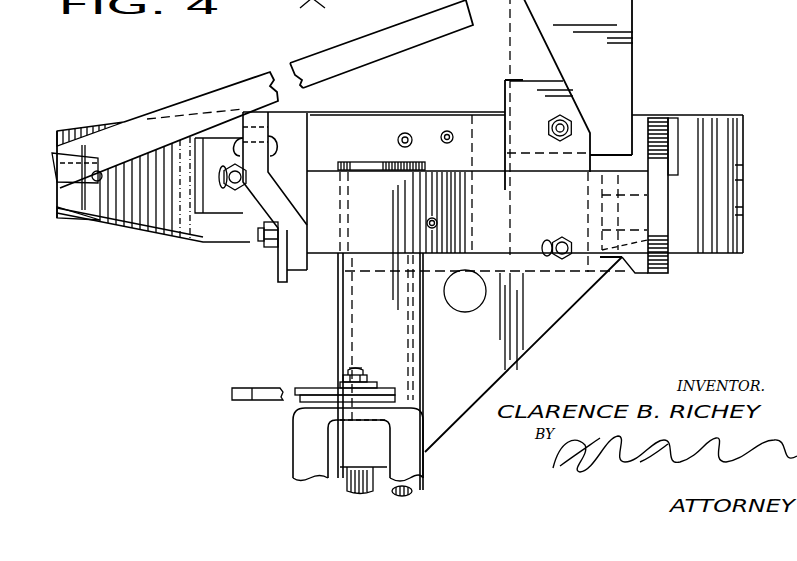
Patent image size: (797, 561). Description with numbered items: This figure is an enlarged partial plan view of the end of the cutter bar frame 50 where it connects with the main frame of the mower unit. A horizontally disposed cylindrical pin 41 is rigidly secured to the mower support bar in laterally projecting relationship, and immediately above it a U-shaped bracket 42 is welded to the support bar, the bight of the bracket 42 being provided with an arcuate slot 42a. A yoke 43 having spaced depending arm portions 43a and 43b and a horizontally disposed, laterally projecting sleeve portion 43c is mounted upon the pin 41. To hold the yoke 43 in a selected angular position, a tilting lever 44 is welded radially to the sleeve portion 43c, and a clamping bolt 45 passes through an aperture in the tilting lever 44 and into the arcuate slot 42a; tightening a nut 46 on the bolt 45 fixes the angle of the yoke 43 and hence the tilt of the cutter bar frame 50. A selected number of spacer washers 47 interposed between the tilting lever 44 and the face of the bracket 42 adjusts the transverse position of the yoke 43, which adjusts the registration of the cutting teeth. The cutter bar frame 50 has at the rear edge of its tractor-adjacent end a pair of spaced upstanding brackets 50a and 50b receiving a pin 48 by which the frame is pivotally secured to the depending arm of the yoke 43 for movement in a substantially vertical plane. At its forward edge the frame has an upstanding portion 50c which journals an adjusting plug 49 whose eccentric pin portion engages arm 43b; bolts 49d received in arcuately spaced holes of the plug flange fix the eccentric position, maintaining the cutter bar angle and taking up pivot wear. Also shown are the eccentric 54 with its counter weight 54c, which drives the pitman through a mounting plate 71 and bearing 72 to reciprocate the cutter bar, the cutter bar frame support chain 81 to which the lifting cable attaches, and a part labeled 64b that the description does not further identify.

The cylindrical pin 41 is at (413, 494).
The U-shaped bracket 42 is at (303, 437).
The arcuate slot 42a is at (410, 406).
The yoke 43 is at (563, 296).
The depending arm portion 43a is at (635, 259).
The depending arm portion 43b is at (393, 221).
The sleeve portion 43c is at (345, 305).
The tilting lever 44 is at (270, 388).
The clamping bolt 45 is at (353, 369).
The nut 46 is at (375, 369).
The spacer washers 47 is at (300, 402).
The pin 48 is at (668, 210).
The adjusting plug 49 is at (322, 248).
The bolts 49d is at (265, 236).
The cutter bar frame 50 is at (636, 66).
The upstanding bracket 50a is at (668, 243).
The upstanding bracket 50b is at (659, 122).
The upstanding portion 50c is at (265, 198).
The eccentric 54 is at (238, 106).
The counter weight 54c is at (153, 91).
The arm 64b is at (359, 4).
The mounting plate 71 is at (187, 97).
The bearing 72 is at (381, 44).
The cutter bar frame support chain 81 is at (273, 143).